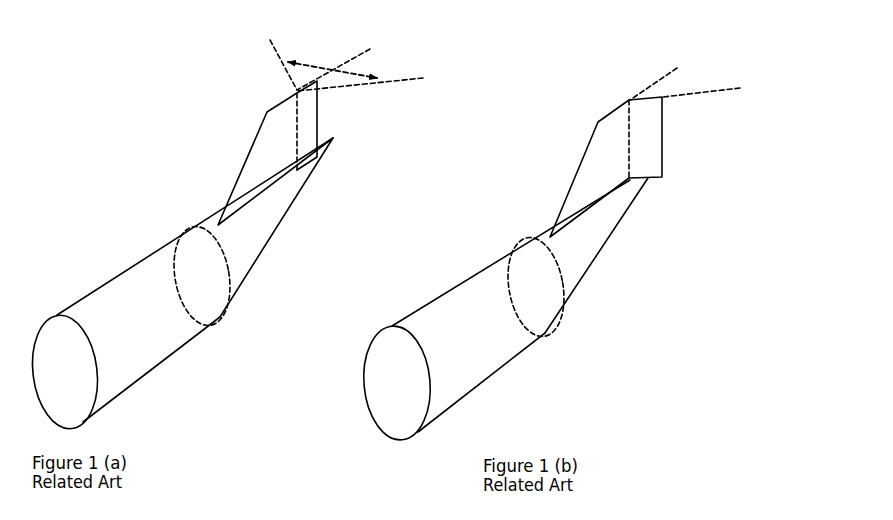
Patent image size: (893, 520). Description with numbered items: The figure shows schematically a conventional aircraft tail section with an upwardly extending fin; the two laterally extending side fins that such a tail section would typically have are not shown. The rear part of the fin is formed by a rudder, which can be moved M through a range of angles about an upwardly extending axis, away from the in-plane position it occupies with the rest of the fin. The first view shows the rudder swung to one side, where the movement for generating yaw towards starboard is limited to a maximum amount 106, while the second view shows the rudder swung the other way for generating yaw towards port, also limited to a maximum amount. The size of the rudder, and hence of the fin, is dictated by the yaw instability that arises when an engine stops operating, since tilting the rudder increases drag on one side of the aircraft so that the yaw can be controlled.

The maximum amount of movement towards starboard 106 is at (270, 40).
The movement M is at (318, 68).